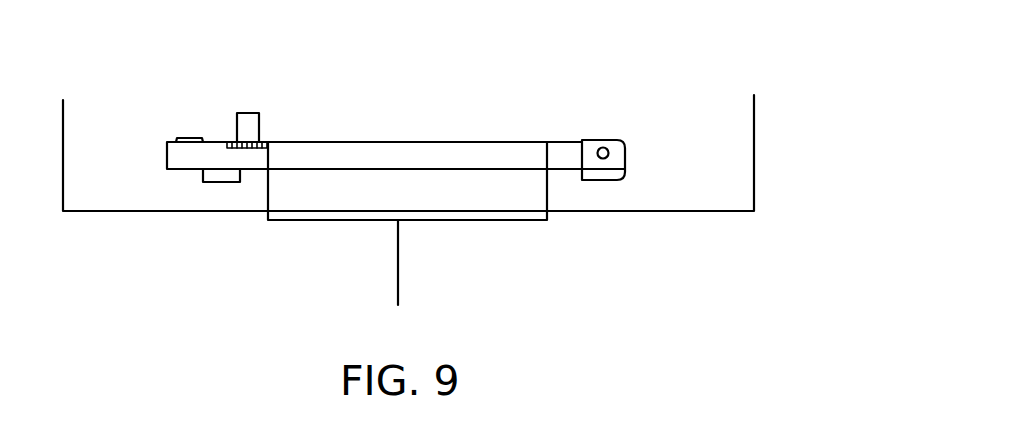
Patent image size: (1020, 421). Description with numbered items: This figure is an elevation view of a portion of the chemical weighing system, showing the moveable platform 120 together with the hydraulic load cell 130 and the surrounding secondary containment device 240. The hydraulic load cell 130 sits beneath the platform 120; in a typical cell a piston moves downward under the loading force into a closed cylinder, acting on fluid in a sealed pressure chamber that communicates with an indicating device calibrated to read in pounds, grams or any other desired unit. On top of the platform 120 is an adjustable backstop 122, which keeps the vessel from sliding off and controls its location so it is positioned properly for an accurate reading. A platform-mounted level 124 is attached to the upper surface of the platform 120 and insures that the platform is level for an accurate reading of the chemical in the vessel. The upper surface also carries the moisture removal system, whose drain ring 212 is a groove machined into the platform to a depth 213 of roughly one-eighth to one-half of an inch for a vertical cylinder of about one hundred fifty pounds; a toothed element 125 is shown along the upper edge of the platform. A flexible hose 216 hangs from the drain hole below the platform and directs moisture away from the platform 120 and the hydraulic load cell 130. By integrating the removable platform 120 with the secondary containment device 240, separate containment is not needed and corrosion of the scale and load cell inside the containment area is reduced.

The platform 120 is at (652, 157).
The adjustable backstop 122 is at (260, 123).
The platform-mounted level 124 is at (193, 138).
The toothed rack 125 is at (250, 148).
The hydraulic load cell 130 is at (203, 183).
The drain ring 212 is at (547, 150).
The depth 213 is at (549, 158).
The hose 216 is at (398, 270).
The secondary containment device 240 is at (754, 157).